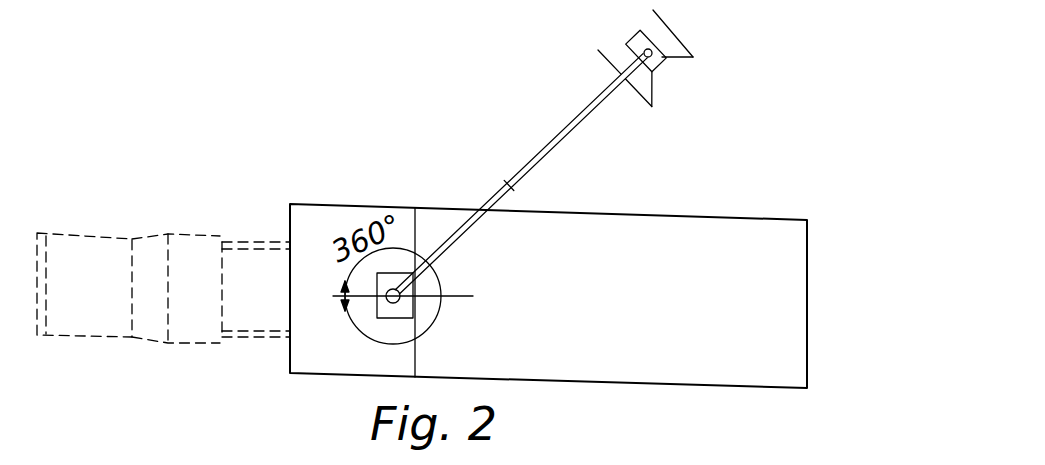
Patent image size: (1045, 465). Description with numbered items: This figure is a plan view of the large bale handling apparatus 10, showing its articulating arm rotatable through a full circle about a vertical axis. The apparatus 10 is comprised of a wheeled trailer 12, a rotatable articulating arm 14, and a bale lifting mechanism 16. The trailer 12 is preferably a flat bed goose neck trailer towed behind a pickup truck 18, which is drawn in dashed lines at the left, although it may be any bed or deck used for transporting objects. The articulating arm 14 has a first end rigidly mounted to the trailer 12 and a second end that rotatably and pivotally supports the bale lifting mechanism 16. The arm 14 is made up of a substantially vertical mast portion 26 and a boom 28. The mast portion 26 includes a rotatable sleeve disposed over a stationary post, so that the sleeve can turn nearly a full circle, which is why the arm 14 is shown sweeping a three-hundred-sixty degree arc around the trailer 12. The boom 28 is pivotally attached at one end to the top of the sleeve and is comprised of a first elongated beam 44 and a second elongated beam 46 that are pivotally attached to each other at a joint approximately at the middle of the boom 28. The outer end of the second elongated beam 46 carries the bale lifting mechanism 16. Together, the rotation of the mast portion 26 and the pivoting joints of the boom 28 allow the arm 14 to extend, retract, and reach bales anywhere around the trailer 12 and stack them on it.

The large bale handling apparatus 10 is at (391, 152).
The wheeled trailer 12 is at (669, 372).
The rotatable articulating arm 14 is at (456, 263).
The bale lifting mechanism 16 is at (681, 23).
The pickup truck 18 is at (198, 237).
The vertical mast portion 26 is at (388, 306).
The boom 28 is at (539, 130).
The first elongated beam 44 is at (473, 224).
The second elongated beam 46 is at (588, 116).